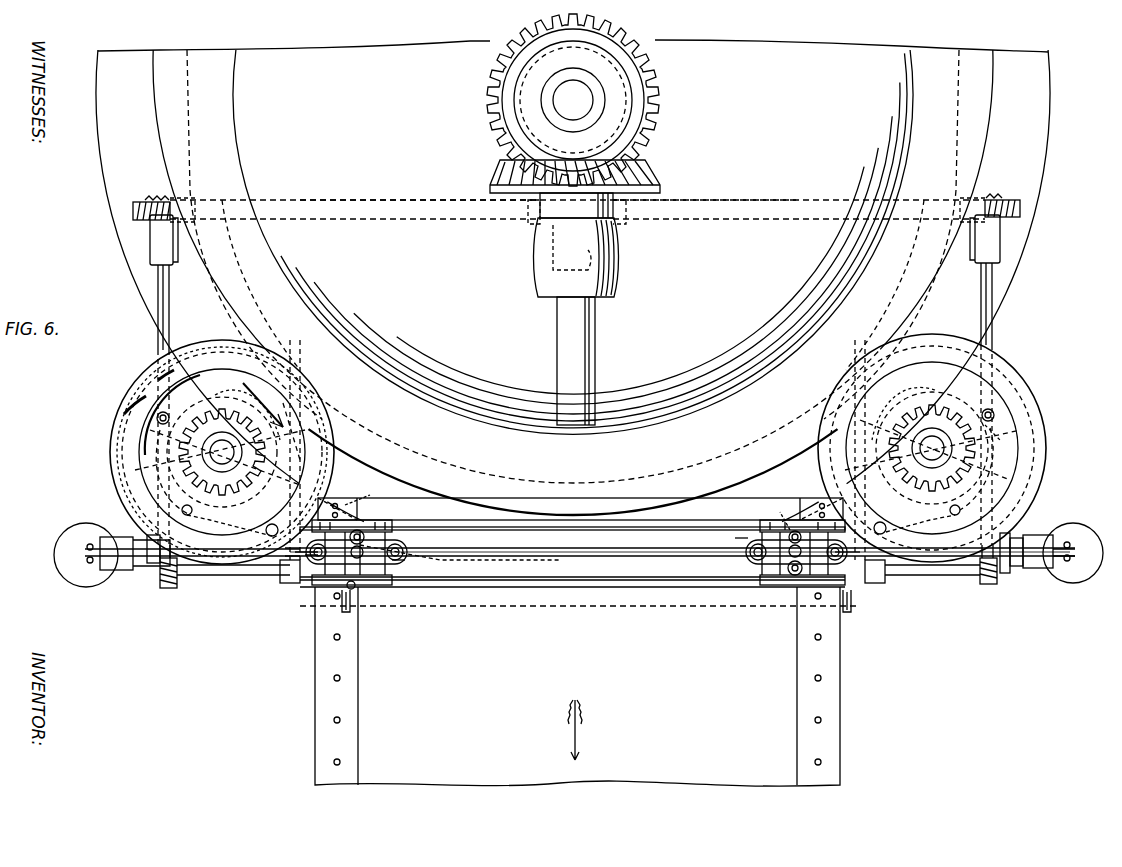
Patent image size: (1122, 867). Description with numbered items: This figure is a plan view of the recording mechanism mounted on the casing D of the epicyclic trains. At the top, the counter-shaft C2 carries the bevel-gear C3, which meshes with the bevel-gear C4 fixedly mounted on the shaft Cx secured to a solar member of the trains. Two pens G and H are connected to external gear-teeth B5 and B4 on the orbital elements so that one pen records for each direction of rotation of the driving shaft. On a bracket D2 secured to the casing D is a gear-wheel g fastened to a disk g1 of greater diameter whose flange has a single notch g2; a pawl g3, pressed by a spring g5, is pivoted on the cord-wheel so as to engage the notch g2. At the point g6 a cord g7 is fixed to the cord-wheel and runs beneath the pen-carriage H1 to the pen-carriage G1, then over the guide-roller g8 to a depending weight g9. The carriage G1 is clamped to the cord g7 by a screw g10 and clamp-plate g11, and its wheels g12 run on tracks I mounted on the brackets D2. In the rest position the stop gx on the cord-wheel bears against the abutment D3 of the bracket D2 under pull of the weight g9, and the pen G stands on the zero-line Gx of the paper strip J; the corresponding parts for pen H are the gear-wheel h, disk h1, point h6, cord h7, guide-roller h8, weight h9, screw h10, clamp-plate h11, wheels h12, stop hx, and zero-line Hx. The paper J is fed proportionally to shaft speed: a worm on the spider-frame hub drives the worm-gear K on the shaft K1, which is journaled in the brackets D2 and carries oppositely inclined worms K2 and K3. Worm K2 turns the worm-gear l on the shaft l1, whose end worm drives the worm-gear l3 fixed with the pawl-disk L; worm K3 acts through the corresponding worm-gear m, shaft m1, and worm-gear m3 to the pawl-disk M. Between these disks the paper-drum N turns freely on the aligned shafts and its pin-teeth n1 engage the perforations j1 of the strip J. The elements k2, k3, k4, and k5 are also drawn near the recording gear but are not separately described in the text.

The casing D is at (573, 286).
The bracket D2 is at (290, 296).
The abutment D3 is at (285, 584).
The bevel-gear C4 is at (592, 70).
The shaft Cx is at (573, 100).
The bevel-gear C3 is at (575, 189).
The counter-shaft C2 is at (576, 361).
The worm-gear K is at (552, 256).
The shaft K1 is at (836, 205).
The worm K2 is at (154, 197).
The worm K3 is at (990, 197).
The worm-gear l is at (133, 210).
The worm-gear m is at (1022, 210).
The shaft l1 is at (158, 352).
The shaft m1 is at (996, 350).
The worm-gear l3 is at (168, 588).
The worm-gear m3 is at (995, 569).
The gear-wheel g is at (226, 455).
The disk g1 is at (230, 520).
The notch g2 is at (218, 452).
The pawl g3 is at (222, 452).
The spring g5 is at (212, 452).
The point g6 is at (160, 585).
The cord g7 is at (118, 466).
The guide-roller g8 is at (1040, 570).
The weight g9 is at (1068, 583).
The screw g10 is at (840, 560).
The clamp-plate g11 is at (796, 552).
The wheels g12 is at (786, 532).
The stop gx is at (250, 578).
The gear-wheel h is at (927, 451).
The disk h1 is at (917, 516).
The point h6 is at (1020, 570).
The cord h7 is at (118, 540).
The guide-roller h8 is at (134, 572).
The weight h9 is at (86, 585).
The screw h10 is at (318, 568).
The clamp-plate h11 is at (356, 552).
The wheels h12 is at (356, 588).
The stop hx is at (925, 578).
The pivot k2 is at (933, 446).
The arm k3 is at (1002, 436).
The wheel k4 is at (1046, 468).
The disk k5 is at (939, 448).
The external gear-teeth B4 is at (338, 500).
The external gear-teeth B5 is at (822, 498).
The pin-teeth n1 is at (581, 491).
The pen H is at (372, 535).
The pen-carriage H1 is at (396, 568).
The zero-line Hx is at (358, 762).
The pen G is at (790, 575).
The pen-carriage G1 is at (752, 540).
The zero-line Gx is at (796, 763).
The tracks I is at (560, 566).
The paper strip J is at (577, 686).
The perforations j1 is at (330, 685).
The pawl-disk L is at (310, 612).
The pawl-disk M is at (848, 614).
The paper-drum N is at (572, 608).